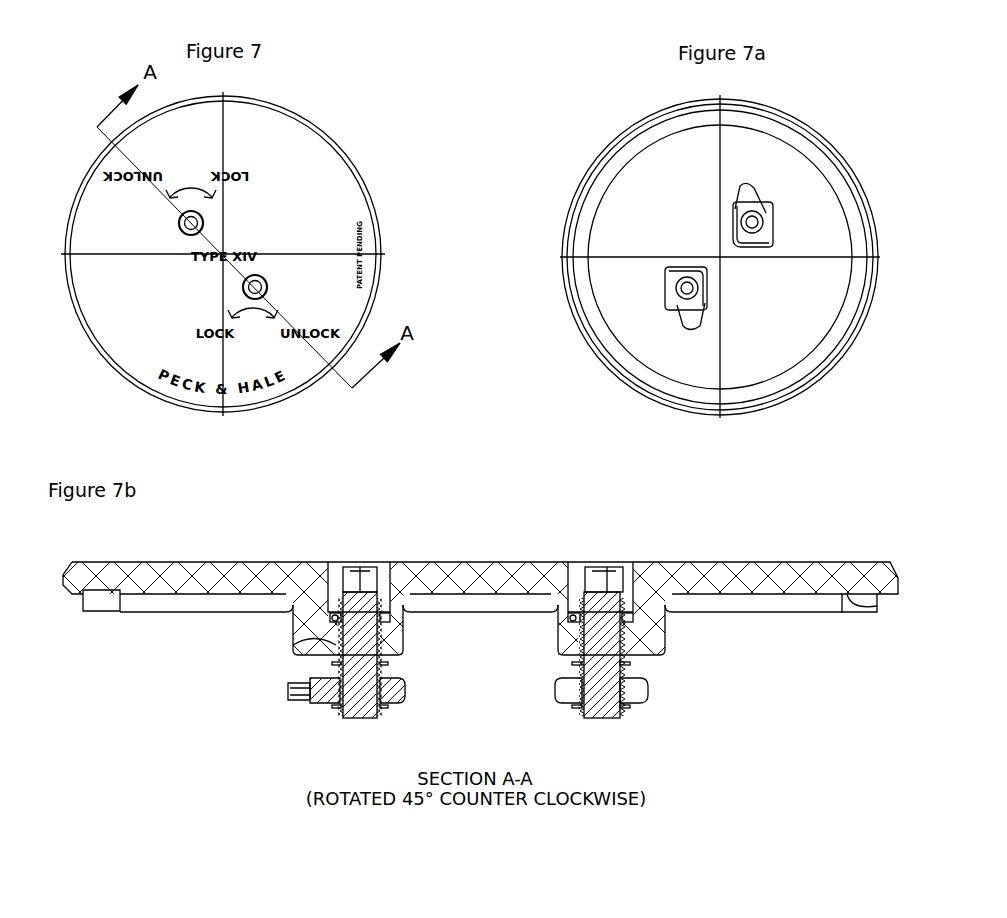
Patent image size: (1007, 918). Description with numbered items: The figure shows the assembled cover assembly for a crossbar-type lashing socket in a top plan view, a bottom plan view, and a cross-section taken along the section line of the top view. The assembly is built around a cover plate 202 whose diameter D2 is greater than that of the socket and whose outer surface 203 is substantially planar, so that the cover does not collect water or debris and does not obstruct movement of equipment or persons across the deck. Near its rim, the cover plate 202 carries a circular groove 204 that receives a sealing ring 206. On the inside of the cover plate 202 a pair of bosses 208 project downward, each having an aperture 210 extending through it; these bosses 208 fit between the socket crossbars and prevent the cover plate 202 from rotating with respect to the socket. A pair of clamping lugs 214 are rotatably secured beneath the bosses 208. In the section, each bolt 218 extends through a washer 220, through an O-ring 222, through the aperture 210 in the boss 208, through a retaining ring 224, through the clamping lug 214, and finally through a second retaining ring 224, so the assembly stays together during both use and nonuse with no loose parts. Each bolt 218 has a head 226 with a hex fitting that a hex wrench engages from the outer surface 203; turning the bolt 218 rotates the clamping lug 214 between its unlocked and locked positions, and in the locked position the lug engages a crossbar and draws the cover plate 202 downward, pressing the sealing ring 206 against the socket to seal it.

In FIG. 7, the cover plate 202 is at (311, 119).
In FIG. 7A, the cover plate 202 is at (836, 376).
In FIG. 7B, the cover plate 202 is at (736, 561).
In FIG. 7B, the outer surface 203 is at (208, 562).
In FIG. 7B, the circular groove 204 is at (878, 606).
In FIG. 7B, the sealing ring 206 is at (828, 614).
In FIG. 7B, the boss 208 is at (295, 625).
In FIG. 7B, the aperture 210 is at (308, 643).
In FIG. 7A, the clamping lug 214 is at (766, 187).
In FIG. 7B, the clamping lug 214 is at (655, 706).
In FIG. 7B, the bolt 218 is at (340, 561).
In FIG. 7B, the washer 220 is at (634, 616).
In FIG. 7B, the O-ring 222 is at (634, 628).
In FIG. 7B, the retaining ring 224 is at (634, 667).
In FIG. 7B, the head 226 is at (597, 568).
In FIG. 7A, the diameter D2 is at (878, 213).